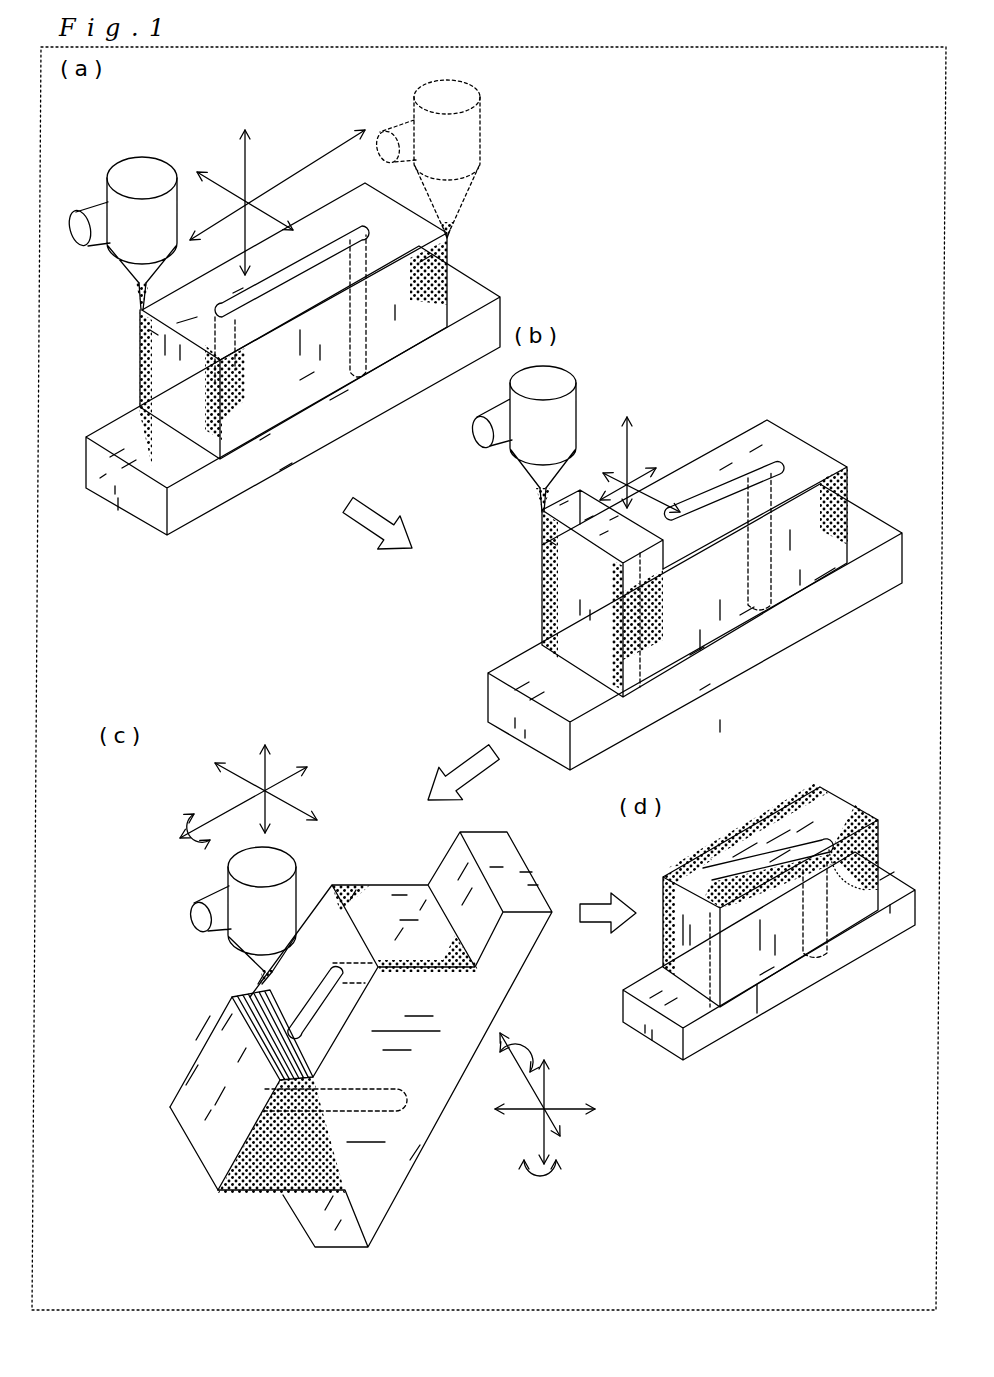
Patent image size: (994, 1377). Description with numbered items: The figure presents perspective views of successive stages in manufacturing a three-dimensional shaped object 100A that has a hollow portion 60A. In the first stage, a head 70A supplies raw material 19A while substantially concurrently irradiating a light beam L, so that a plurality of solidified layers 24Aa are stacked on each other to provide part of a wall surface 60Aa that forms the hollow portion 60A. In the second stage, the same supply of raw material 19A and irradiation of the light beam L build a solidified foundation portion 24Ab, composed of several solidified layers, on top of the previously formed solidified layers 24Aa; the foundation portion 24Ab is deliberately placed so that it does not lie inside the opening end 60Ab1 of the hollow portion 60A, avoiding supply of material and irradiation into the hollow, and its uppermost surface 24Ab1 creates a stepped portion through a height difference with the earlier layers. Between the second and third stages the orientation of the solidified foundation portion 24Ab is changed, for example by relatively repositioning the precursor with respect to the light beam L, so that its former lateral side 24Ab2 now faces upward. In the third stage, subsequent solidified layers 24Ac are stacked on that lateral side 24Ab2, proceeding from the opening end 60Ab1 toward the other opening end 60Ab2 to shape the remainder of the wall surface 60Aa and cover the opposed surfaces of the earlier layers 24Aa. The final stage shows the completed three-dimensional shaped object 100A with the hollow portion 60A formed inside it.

The light beam L is at (136, 292).
The raw material 19A is at (139, 297).
The head 70A is at (232, 880).
The solidified layer 24Aa is at (200, 368).
The solidified foundation portion 24Ab is at (692, 535).
The uppermost surface of solidified foundation portion 24Ab1 is at (645, 547).
The lateral side of solidified foundation portion 24Ab2 is at (662, 548).
The subsequent solidified layer 24Ac is at (222, 1085).
The hollow portion 60A is at (440, 246).
The wall surface 60Aa is at (420, 305).
The opening end 60Ab1 is at (623, 553).
The opening end 60Ab2 is at (335, 967).
The three-dimensional shaped object 100A is at (867, 768).